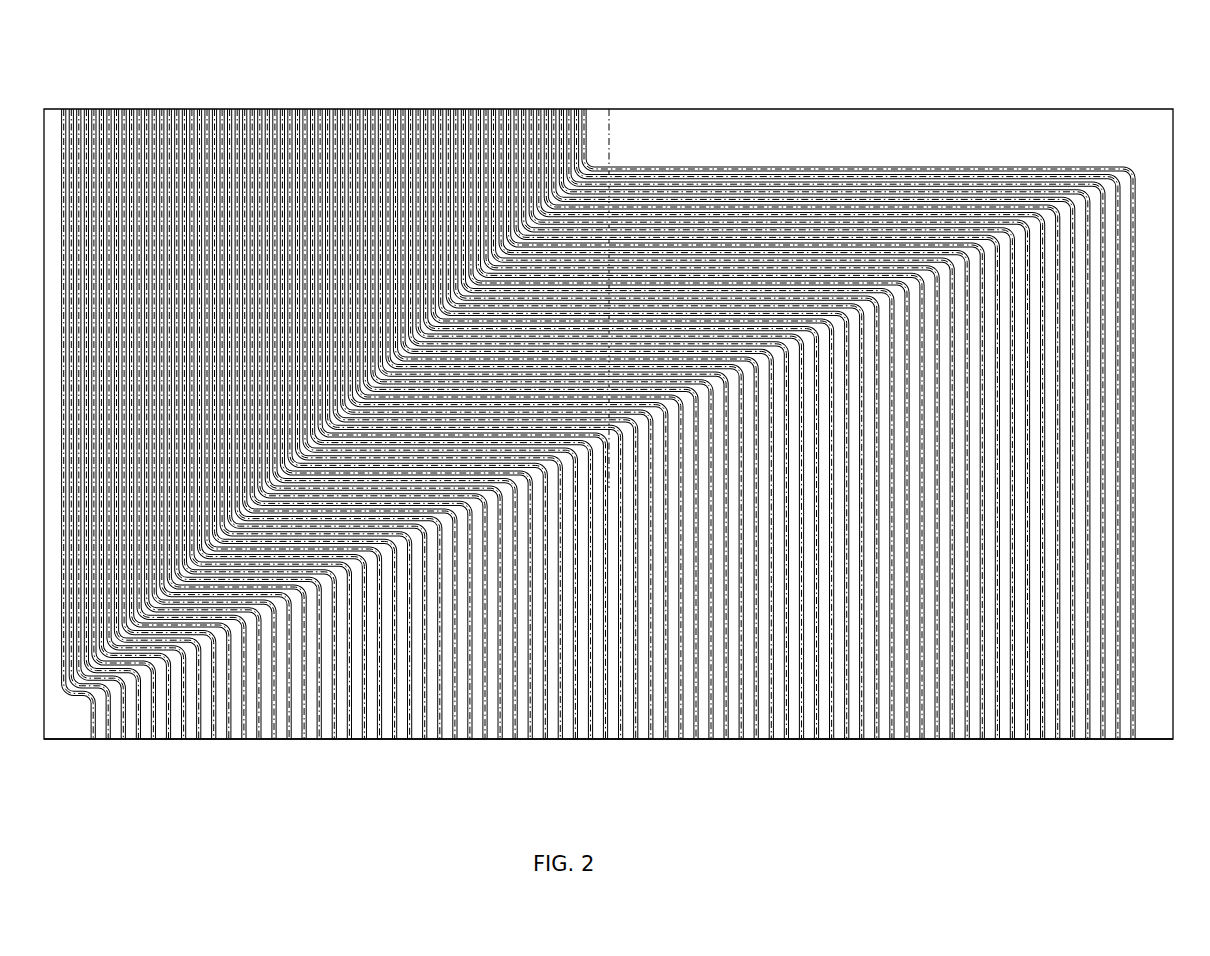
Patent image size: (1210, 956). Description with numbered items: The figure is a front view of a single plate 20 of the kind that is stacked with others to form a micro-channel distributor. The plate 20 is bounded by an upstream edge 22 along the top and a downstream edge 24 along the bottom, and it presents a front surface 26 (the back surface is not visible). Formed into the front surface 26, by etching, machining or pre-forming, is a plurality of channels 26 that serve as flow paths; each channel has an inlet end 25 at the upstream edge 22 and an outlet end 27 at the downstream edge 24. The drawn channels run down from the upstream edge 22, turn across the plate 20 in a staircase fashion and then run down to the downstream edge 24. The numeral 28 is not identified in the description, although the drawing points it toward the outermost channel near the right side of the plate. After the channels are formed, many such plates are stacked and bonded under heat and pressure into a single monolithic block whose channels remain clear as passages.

The plate 20 is at (788, 838).
The upstream edge 22 is at (943, 101).
The downstream edge 24 is at (1145, 731).
The inlet end 25 is at (498, 102).
The front surface 26 is at (1137, 147).
The outlet end 27 is at (1004, 731).
The outermost vertical conductor segment 28 is at (1130, 457).